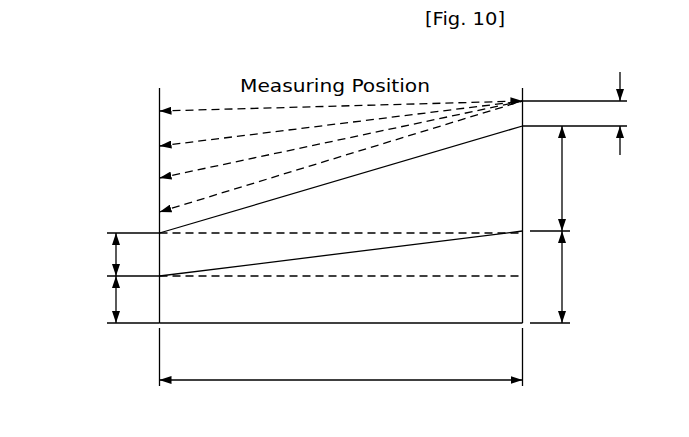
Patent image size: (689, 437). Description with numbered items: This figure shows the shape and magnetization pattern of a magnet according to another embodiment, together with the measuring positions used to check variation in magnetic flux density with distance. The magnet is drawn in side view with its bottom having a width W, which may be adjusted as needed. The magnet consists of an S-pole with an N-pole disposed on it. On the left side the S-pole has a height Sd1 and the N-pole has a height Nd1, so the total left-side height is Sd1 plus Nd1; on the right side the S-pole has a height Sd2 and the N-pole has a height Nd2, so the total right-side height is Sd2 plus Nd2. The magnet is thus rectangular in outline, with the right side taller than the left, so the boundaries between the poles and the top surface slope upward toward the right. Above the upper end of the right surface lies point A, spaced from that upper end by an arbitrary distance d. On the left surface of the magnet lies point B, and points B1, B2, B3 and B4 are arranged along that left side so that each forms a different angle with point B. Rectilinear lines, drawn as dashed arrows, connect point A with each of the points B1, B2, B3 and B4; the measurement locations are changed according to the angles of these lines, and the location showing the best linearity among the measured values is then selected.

The point A is at (522, 68).
The point B is at (157, 69).
The point B1 is at (316, 111).
The point B2 is at (316, 130).
The point B3 is at (316, 146).
The point B4 is at (316, 163).
The height of the left side of the N-pole Nd1 is at (83, 254).
The height of the left side of the S-pole Sd1 is at (83, 299).
The height of the right side of the N-pole Nd2 is at (591, 178).
The height of the right side of the S-pole Sd2 is at (589, 277).
The arbitrary distance d is at (636, 113).
The width of the bottom of the magnet W is at (341, 366).